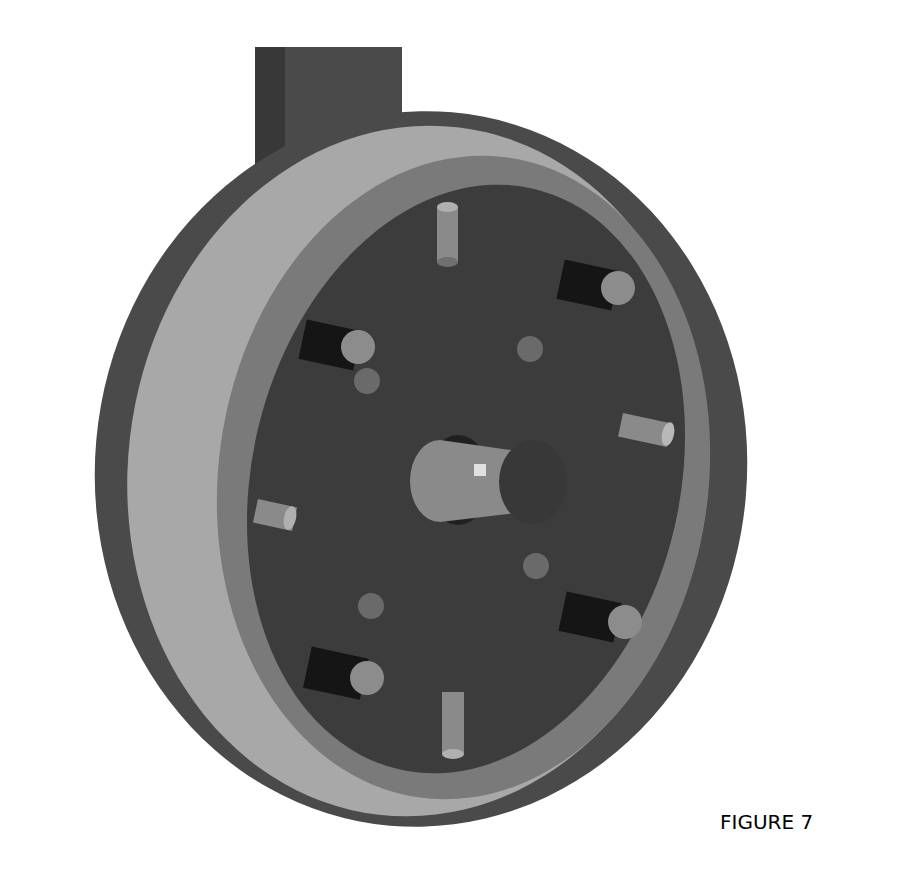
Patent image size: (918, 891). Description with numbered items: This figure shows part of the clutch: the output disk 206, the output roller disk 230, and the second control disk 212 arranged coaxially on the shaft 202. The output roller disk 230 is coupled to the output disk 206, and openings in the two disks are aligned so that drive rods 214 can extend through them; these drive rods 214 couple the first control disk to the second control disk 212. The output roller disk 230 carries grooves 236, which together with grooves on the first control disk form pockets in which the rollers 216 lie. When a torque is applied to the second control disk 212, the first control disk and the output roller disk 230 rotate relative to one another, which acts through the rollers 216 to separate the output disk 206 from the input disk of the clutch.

The shaft 202 is at (525, 447).
The output disk 206 is at (263, 198).
The second control disk 212 is at (180, 214).
The drive rods 214 is at (313, 653).
The rollers 216 is at (463, 205).
The output roller disk 230 is at (535, 240).
The grooves 236 is at (672, 426).